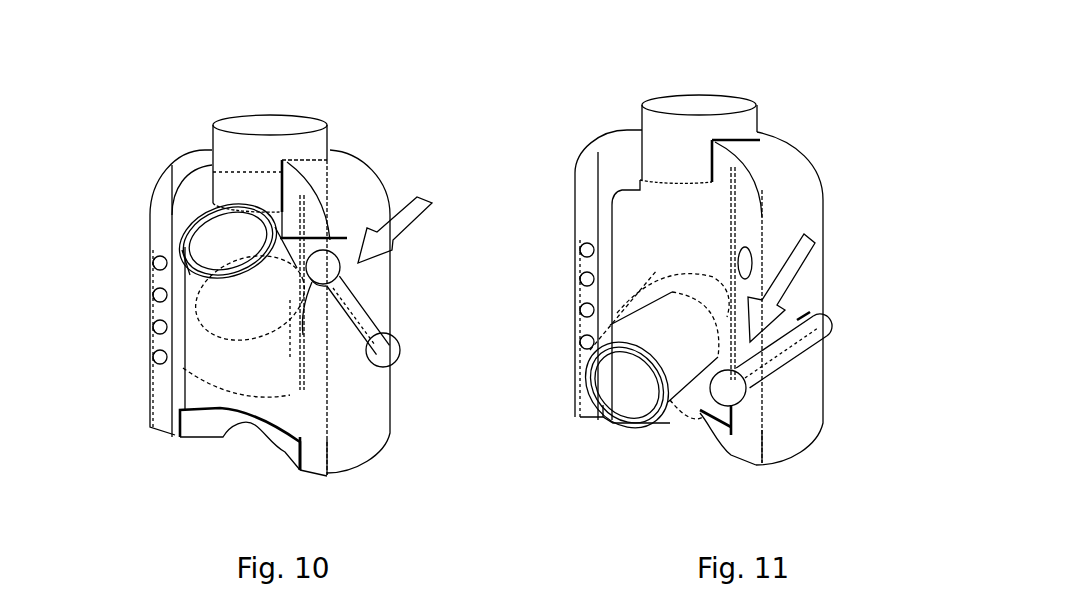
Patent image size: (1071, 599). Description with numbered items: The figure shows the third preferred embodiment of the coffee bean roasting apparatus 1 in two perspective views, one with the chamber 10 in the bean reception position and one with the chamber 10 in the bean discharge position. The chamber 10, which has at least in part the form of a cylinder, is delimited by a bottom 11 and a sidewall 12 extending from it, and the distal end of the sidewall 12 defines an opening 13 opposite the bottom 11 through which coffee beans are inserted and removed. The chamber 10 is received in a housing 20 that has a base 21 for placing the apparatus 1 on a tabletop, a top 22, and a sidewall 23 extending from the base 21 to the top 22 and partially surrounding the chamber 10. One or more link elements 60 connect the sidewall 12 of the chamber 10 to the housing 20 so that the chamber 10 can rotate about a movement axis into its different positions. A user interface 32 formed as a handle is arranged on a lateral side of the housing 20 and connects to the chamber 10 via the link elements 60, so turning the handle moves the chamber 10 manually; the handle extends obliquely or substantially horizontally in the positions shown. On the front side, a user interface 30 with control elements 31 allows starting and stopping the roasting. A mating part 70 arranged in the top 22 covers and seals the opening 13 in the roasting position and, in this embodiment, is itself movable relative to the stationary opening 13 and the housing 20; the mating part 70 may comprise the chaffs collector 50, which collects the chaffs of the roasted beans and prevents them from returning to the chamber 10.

In FIG. 10, the apparatus 1 is at (419, 83).
In FIG. 11, the apparatus 1 is at (857, 57).
In FIG. 10, the chamber 10 is at (220, 237).
In FIG. 11, the chamber 10 is at (624, 377).
In FIG. 10, the bottom 11 is at (270, 377).
In FIG. 11, the bottom 11 is at (706, 235).
In FIG. 10, the sidewall 12 is at (235, 295).
In FIG. 11, the sidewall 12 is at (660, 305).
In FIG. 10, the opening 13 is at (328, 241).
In FIG. 11, the opening 13 is at (668, 392).
In FIG. 10, the housing 20 is at (374, 160).
In FIG. 11, the housing 20 is at (806, 133).
In FIG. 10, the base 21 is at (178, 425).
In FIG. 11, the base 21 is at (612, 418).
In FIG. 10, the top 22 is at (185, 178).
In FIG. 11, the top 22 is at (620, 148).
In FIG. 10, the sidewall 23 is at (367, 420).
In FIG. 11, the sidewall 23 is at (803, 395).
In FIG. 10, the user interface 30 is at (126, 328).
In FIG. 11, the user interface 30 is at (563, 302).
In FIG. 10, the control elements 31 is at (157, 296).
In FIG. 11, the control elements 31 is at (586, 280).
In FIG. 10, the user interface 32 is at (383, 323).
In FIG. 11, the user interface 32 is at (812, 342).
In FIG. 10, the chaffs collector 50 is at (277, 112).
In FIG. 11, the chaffs collector 50 is at (709, 89).
In FIG. 10, the link elements 60 is at (271, 313).
In FIG. 11, the link elements 60 is at (713, 266).
In FIG. 10, the mating part 70 is at (248, 170).
In FIG. 11, the mating part 70 is at (685, 142).